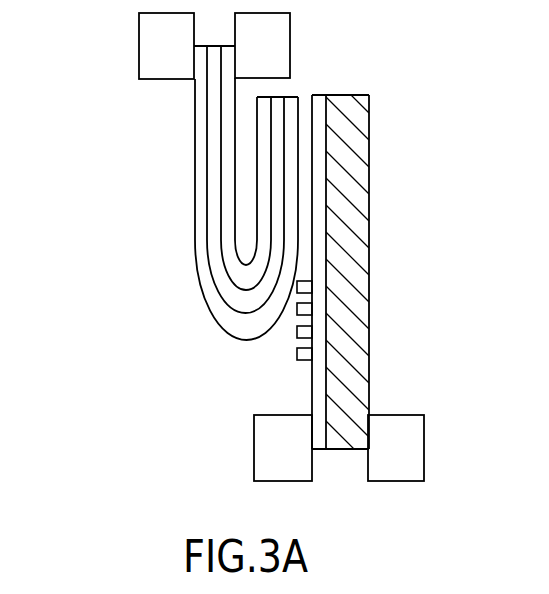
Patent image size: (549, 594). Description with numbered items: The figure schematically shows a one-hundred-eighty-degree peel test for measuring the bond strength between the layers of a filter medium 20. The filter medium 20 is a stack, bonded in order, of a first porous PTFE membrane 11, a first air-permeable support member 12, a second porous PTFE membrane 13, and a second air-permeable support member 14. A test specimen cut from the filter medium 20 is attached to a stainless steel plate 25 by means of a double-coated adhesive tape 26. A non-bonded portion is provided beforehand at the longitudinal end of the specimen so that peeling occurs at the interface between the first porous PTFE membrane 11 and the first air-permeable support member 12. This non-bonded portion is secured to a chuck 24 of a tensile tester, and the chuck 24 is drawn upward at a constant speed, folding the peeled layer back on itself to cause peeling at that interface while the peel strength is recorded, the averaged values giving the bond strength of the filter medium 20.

The first porous PTFE membrane 11 is at (305, 137).
The first air-permeable support member 12 is at (292, 192).
The second porous PTFE membrane 13 is at (215, 130).
The second air-permeable support member 14 is at (230, 178).
The filter medium 20 is at (185, 238).
The chuck 24 is at (162, 43).
The stainless steel plate 25 is at (343, 342).
The double-coated adhesive tape 26 is at (317, 287).